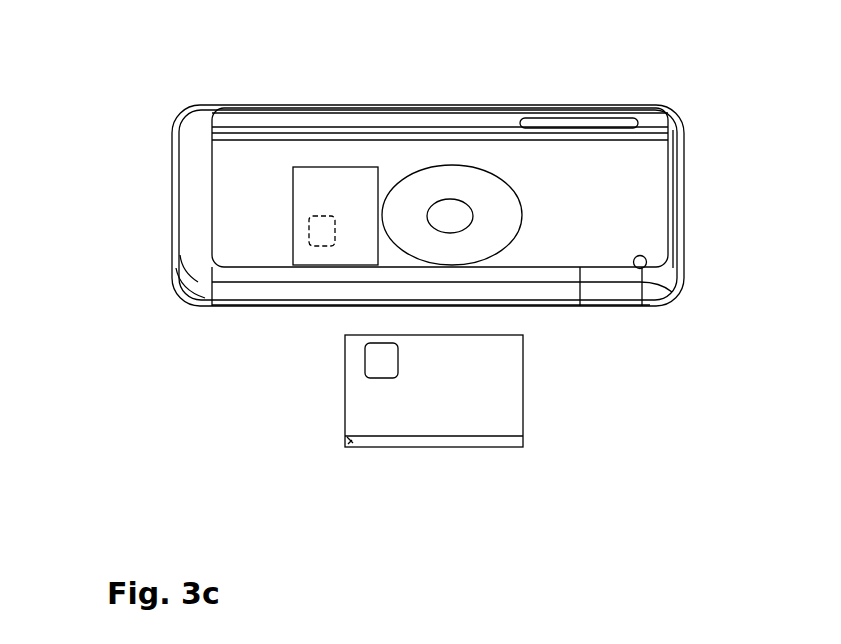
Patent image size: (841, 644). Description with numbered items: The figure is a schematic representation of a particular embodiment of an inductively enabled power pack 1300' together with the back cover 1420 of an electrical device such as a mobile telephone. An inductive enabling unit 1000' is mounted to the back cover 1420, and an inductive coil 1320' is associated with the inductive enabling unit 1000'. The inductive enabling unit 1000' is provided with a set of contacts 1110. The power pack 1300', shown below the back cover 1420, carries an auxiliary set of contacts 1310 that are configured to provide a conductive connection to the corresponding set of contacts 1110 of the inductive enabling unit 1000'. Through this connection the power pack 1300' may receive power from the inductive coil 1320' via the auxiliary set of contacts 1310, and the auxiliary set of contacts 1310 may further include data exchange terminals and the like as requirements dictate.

The inductive enabling unit 1000' is at (389, 152).
The set of contacts 1110 is at (312, 234).
The inductive coil 1320' is at (492, 159).
The back cover 1420 is at (583, 165).
The inductively enabled power pack 1300' is at (527, 389).
The auxiliary set of contacts 1310 is at (372, 362).